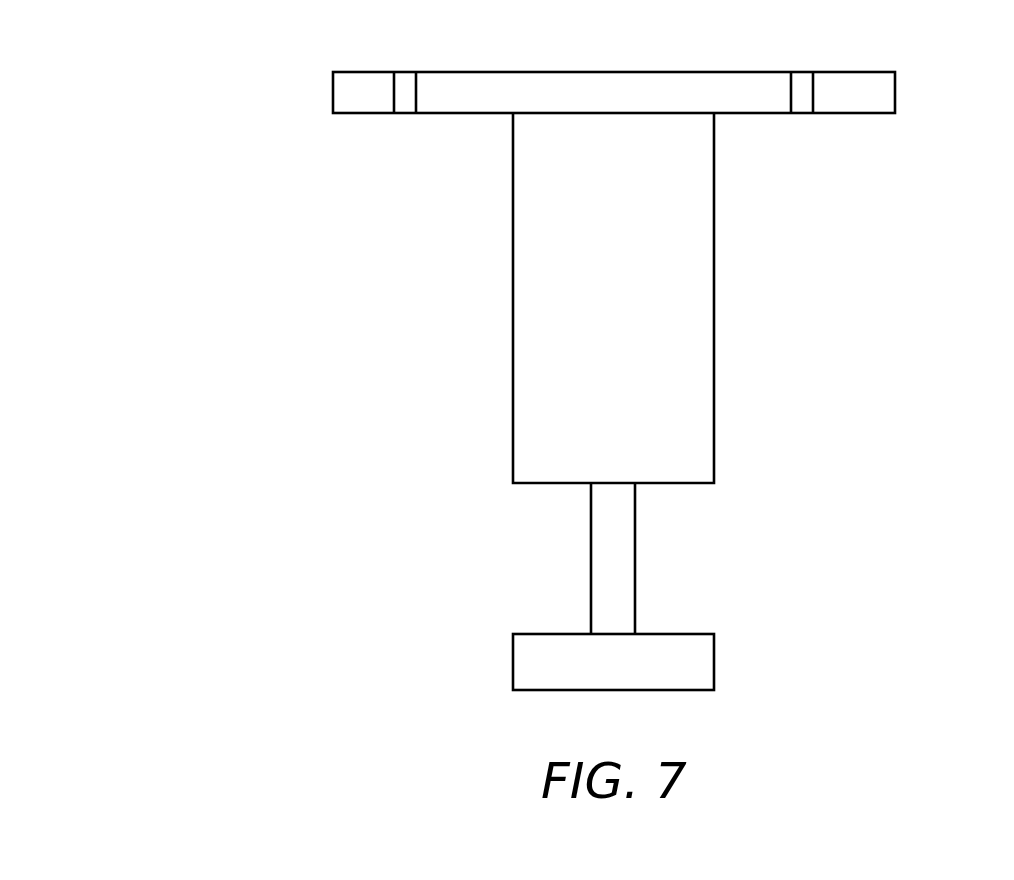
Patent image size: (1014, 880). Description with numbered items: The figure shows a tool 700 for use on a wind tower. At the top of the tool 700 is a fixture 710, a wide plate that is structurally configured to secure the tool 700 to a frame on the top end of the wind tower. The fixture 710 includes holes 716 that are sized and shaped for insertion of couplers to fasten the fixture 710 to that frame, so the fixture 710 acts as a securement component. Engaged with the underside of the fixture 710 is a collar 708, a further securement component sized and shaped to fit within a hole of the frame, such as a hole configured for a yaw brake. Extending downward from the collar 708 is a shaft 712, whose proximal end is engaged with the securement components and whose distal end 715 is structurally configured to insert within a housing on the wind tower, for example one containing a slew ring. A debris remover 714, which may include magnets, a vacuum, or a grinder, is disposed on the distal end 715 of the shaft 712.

The tool 700 is at (246, 66).
The collar 708 is at (527, 395).
The fixture 710 is at (870, 95).
The shaft 712 is at (589, 560).
The debris remover 714 is at (537, 658).
The distal end 715 is at (676, 610).
The holes 716 is at (400, 78).